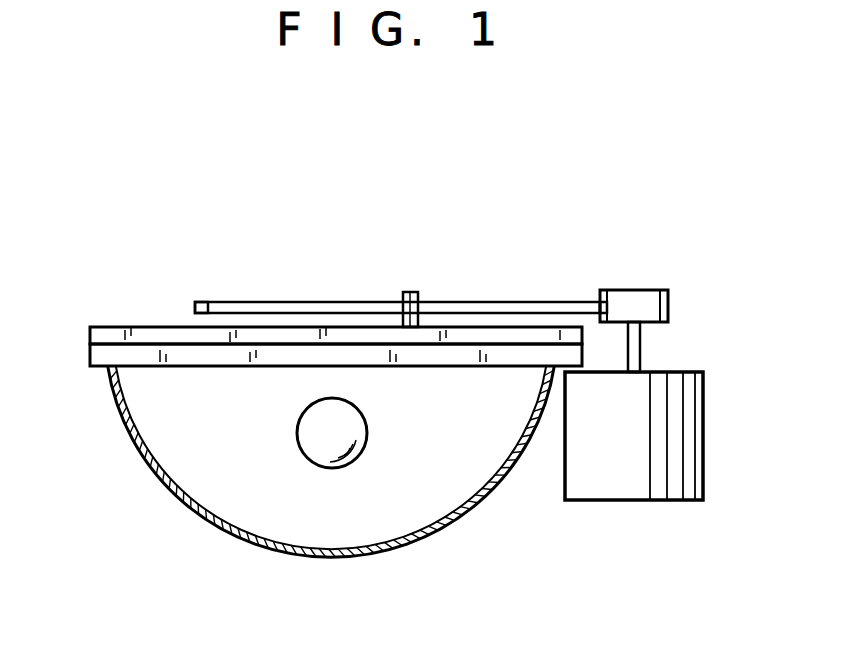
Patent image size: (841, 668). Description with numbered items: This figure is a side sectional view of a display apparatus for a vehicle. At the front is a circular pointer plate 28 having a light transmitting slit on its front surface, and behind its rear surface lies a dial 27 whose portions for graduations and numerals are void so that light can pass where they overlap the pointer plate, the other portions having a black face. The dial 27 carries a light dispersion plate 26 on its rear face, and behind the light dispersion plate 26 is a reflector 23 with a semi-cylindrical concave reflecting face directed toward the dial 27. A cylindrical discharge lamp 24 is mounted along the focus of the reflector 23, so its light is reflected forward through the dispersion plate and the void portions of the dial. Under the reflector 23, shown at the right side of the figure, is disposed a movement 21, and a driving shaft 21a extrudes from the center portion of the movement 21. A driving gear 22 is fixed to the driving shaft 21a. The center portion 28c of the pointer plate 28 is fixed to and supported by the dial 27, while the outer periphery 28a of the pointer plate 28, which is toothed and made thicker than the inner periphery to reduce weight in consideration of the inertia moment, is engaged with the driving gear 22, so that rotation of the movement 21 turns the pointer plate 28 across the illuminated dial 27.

The movement 21 is at (703, 450).
The driving shaft 21a is at (642, 345).
The driving gear 22 is at (648, 283).
The reflector 23 is at (418, 542).
The cylindrical discharge lamp 24 is at (307, 445).
The light dispersion plate 26 is at (88, 357).
The dial 27 is at (97, 338).
The circular pointer plate 28 is at (353, 302).
The outer periphery of the pointer plate 28a is at (200, 302).
The center portion of the pointer plate 28c is at (420, 292).